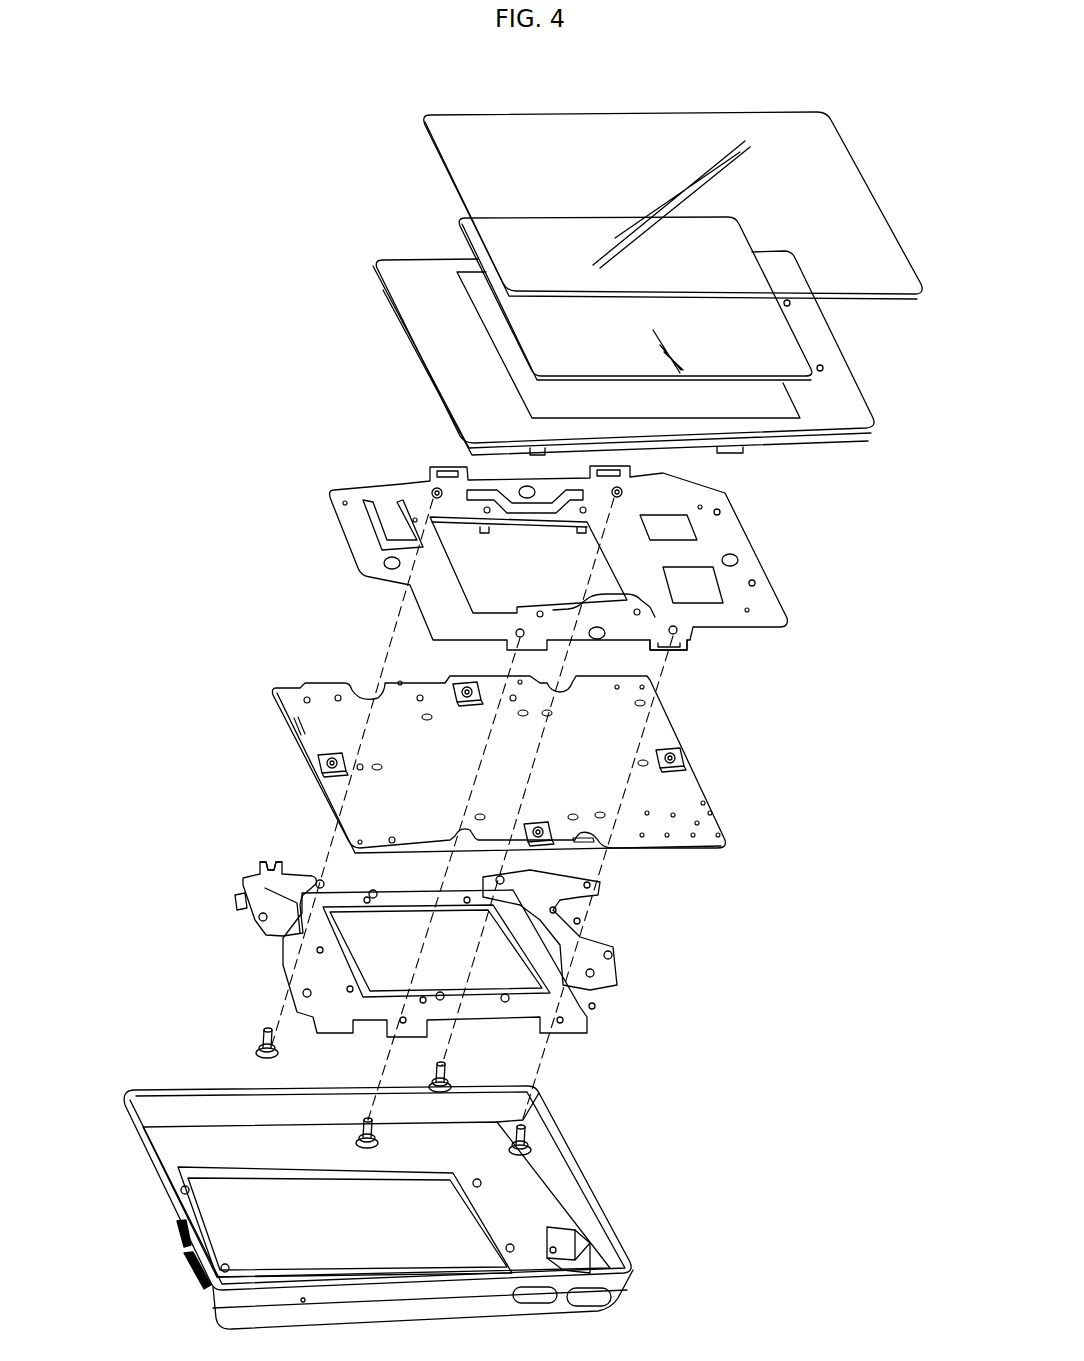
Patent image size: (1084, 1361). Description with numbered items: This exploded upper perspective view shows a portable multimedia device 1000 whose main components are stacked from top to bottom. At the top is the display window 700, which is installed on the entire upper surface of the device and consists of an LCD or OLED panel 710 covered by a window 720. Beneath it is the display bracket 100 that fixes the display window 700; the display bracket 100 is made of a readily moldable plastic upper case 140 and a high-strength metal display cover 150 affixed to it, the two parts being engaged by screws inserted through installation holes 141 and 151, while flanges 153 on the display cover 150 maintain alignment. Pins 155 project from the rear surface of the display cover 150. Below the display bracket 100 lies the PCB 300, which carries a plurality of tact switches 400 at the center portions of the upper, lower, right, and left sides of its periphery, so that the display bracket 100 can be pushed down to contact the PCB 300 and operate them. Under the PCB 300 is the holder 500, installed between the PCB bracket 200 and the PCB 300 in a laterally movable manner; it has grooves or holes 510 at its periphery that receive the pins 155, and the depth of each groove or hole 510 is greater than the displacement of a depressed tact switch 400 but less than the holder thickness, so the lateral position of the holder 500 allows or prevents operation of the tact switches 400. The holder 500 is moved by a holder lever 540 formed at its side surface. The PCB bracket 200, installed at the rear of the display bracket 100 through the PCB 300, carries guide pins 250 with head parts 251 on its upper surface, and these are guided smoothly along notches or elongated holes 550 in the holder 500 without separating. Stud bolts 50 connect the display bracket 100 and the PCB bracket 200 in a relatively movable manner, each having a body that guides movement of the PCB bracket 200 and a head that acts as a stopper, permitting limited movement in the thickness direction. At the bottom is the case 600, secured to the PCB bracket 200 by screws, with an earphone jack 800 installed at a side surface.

The portable multimedia device 1000 is at (188, 283).
The display window 700 is at (324, 180).
The window 720 is at (465, 160).
The LCD or OLED panel 710 is at (467, 231).
The installation hole 141 is at (790, 303).
The display bracket 100 is at (326, 377).
The upper case 140 is at (465, 352).
The display cover 150 is at (372, 485).
The installation hole 151 is at (718, 512).
The flange 153 is at (693, 645).
The pin 155 is at (580, 527).
The PCB 300 is at (328, 700).
The tact switch 400 is at (530, 820).
The holder 500 is at (267, 890).
The holder lever 540 is at (263, 866).
The groove or hole 510 is at (373, 893).
The PCB bracket 200 is at (287, 990).
The guide pin 250 is at (320, 947).
The head part 251 is at (448, 935).
The notch or elongated hole 550 is at (593, 1007).
The stud bolt 50 is at (362, 1145).
The case 600 is at (160, 1097).
The earphone jack 800 is at (567, 1233).